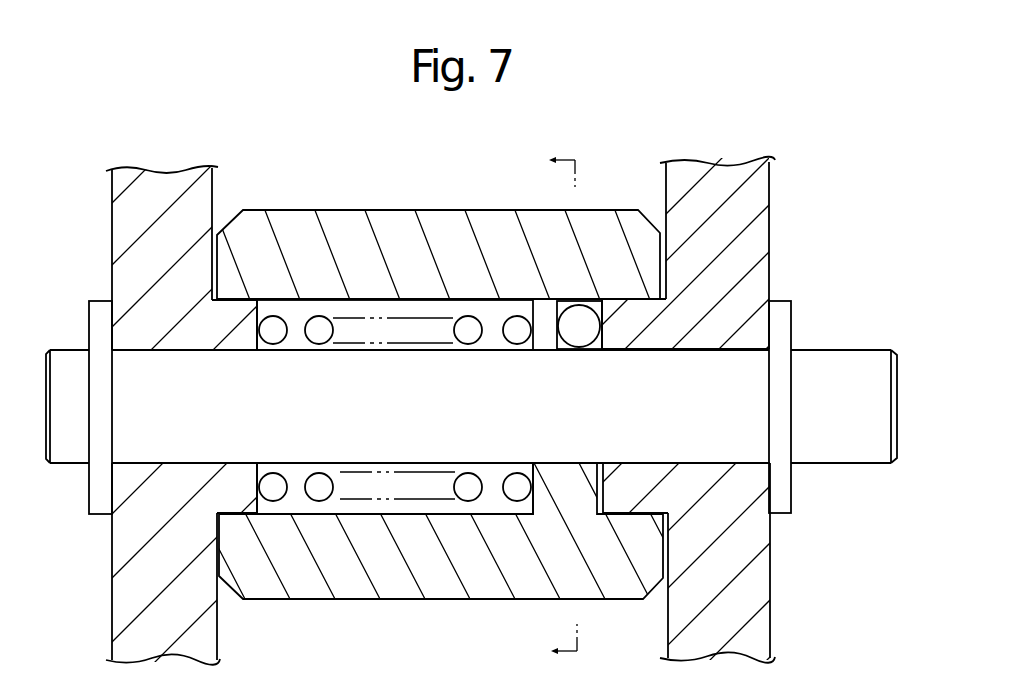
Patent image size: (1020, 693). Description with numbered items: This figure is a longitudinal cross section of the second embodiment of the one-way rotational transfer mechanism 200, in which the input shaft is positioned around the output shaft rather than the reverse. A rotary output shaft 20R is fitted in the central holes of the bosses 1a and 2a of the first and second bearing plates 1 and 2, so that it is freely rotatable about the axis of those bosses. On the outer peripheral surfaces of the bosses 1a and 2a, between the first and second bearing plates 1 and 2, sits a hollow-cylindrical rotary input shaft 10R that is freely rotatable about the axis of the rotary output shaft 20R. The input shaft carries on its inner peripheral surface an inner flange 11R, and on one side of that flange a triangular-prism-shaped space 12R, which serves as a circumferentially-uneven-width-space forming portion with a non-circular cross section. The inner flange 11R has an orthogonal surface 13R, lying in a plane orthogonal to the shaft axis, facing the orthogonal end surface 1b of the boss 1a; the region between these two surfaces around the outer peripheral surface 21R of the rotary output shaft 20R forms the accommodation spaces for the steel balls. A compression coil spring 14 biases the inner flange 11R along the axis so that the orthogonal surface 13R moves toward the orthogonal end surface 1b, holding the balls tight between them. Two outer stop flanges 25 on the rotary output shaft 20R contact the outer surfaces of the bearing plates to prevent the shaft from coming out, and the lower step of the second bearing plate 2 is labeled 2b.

The one-way rotational transfer mechanism 200 is at (838, 190).
The first bearing plate 1 is at (769, 206).
The boss 1a is at (627, 318).
The orthogonal end surface 1b is at (602, 497).
The second bearing plate 2 is at (112, 203).
The boss 2a is at (240, 328).
The housing protrusion 2b is at (258, 499).
The hollow-cylindrical rotary input shaft 10R is at (334, 233).
The inner flange 11R is at (557, 347).
The triangular-prism-shaped space 12R is at (580, 306).
The orthogonal surface 13R is at (566, 338).
The compression coil spring 14 is at (320, 327).
The rotary output shaft 20R is at (851, 358).
The outer peripheral surface 21R is at (589, 343).
The outer stop flange 25 is at (89, 323).